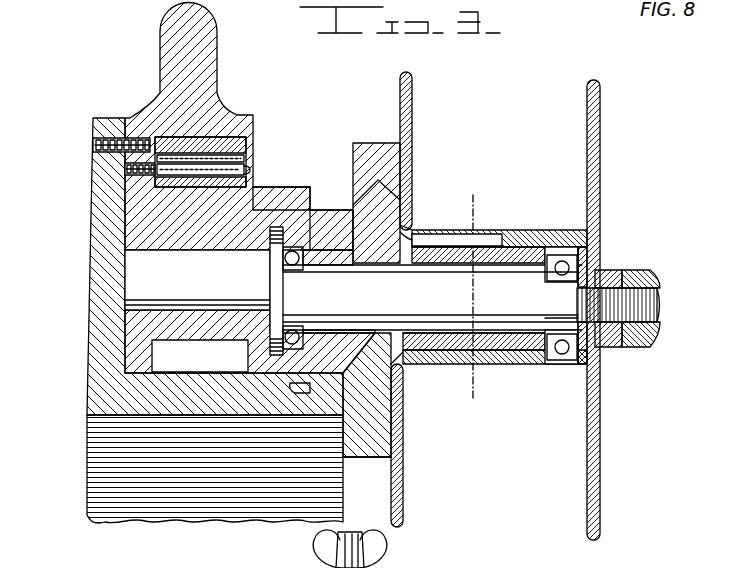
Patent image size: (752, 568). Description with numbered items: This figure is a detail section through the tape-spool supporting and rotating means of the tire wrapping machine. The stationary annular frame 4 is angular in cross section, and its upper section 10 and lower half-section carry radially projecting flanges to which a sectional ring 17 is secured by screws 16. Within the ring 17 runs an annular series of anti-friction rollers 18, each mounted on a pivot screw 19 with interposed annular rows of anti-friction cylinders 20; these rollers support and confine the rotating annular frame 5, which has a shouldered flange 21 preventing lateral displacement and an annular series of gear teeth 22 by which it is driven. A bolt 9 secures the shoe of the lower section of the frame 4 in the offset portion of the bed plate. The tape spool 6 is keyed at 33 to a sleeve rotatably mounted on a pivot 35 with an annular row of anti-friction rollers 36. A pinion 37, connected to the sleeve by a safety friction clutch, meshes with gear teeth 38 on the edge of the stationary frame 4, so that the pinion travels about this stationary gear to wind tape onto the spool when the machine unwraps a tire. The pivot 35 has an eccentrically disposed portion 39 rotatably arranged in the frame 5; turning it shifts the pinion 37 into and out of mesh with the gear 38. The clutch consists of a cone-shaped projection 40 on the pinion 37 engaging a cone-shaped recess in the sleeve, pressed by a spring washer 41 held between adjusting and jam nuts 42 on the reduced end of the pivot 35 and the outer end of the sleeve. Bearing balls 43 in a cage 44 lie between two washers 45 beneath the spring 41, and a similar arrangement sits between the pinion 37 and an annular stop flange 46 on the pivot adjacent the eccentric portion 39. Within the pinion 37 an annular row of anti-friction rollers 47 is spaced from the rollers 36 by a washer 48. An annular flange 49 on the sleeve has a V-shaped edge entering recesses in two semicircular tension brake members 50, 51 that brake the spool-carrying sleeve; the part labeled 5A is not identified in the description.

The stationary annular frame 4 is at (95, 353).
The rotating annular frame 5 is at (250, 213).
The wing nut 5A is at (372, 556).
The tape spool 6 is at (590, 120).
The bolt 9 is at (432, 295).
The upper section of stationary frame 10 is at (217, 87).
The screws 16 is at (96, 152).
The sectional ring 17 is at (96, 262).
The anti-friction rollers 18 is at (223, 155).
The pivot screws 19 is at (247, 167).
The anti-friction cylinders 20 is at (235, 158).
The shouldered portion or flange 21 is at (120, 180).
The gear teeth 22 is at (295, 195).
The key 33 is at (487, 243).
The pivot 35 is at (462, 318).
The anti-friction rollers 36 is at (535, 338).
The pinion 37 is at (328, 232).
The gear teeth 38 is at (300, 380).
The eccentrically disposed portion 39 is at (197, 280).
The cone-shaped projection 40 is at (408, 228).
The spring washer 41 is at (600, 276).
The adjusting and jam nuts 42 is at (628, 274).
The bearing balls 43 is at (597, 237).
The cage 44 is at (558, 276).
The washers 45 is at (596, 252).
The annular stop flange 46 is at (284, 280).
The anti-friction rollers 47 is at (350, 268).
The washer 48 is at (380, 266).
The annular flange 49 is at (403, 188).
The tension brake member 50 is at (388, 142).
The tension brake member 51 is at (375, 458).